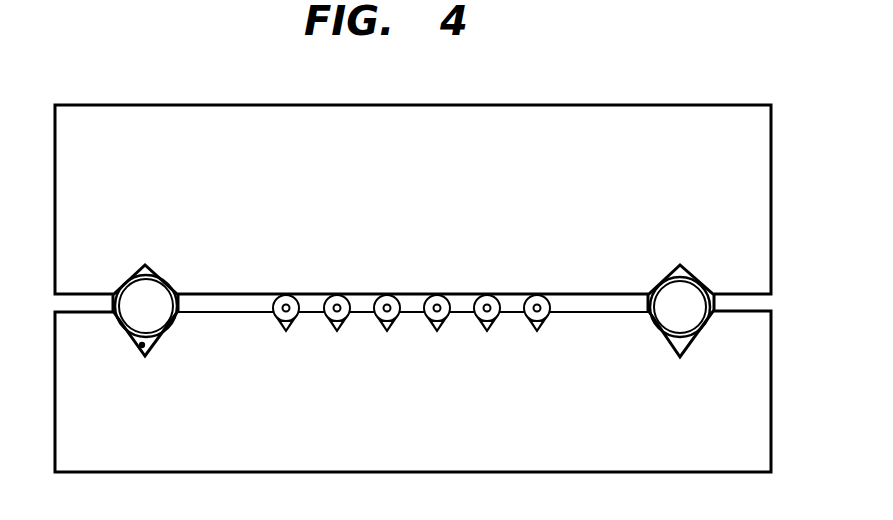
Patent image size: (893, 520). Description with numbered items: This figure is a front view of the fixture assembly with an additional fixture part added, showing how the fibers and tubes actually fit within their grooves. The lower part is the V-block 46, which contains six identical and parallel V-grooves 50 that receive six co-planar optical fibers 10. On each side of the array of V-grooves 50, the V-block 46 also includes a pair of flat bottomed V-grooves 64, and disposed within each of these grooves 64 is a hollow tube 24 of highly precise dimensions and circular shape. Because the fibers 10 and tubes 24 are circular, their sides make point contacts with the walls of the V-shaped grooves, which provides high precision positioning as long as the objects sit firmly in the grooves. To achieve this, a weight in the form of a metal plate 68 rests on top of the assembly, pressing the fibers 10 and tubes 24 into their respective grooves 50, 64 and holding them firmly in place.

The metal plate 68 is at (486, 225).
The V-block 46 is at (488, 415).
The optical fibers 10 is at (387, 303).
The V-grooves 50 is at (385, 323).
The hollow tubes 24 is at (163, 334).
The flat bottomed V-grooves 64 is at (141, 349).